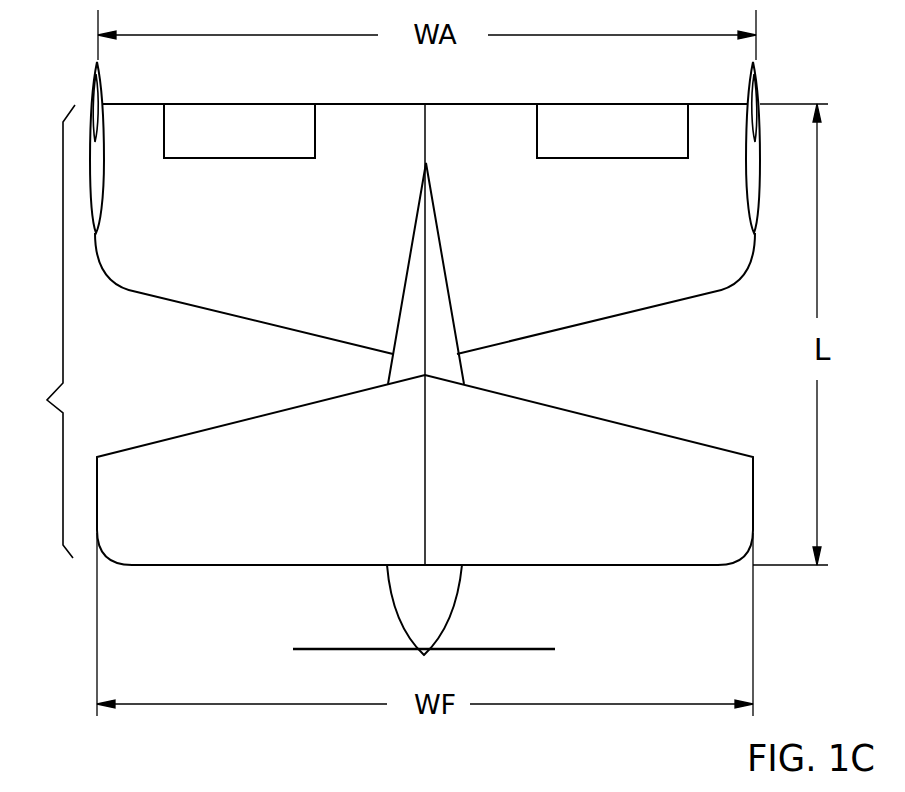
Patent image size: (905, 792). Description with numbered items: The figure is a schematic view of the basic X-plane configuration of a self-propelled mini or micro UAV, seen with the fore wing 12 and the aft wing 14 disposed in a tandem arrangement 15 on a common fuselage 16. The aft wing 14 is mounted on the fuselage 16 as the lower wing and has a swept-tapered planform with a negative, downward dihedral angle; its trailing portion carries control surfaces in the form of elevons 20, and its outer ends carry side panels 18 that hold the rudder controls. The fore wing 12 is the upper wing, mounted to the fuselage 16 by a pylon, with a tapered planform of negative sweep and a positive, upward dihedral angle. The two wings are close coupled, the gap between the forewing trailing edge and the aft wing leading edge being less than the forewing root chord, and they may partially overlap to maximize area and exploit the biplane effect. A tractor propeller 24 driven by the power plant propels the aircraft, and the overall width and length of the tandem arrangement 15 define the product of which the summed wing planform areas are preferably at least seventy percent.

The fore wing 12 is at (573, 488).
The aft wing 14 is at (278, 255).
The tandem arrangement 15 is at (42, 331).
The fuselage 16 is at (444, 340).
The side panels 18 is at (760, 115).
The control surfaces (elevons) 20 is at (630, 142).
The tractor propeller 24 is at (503, 649).